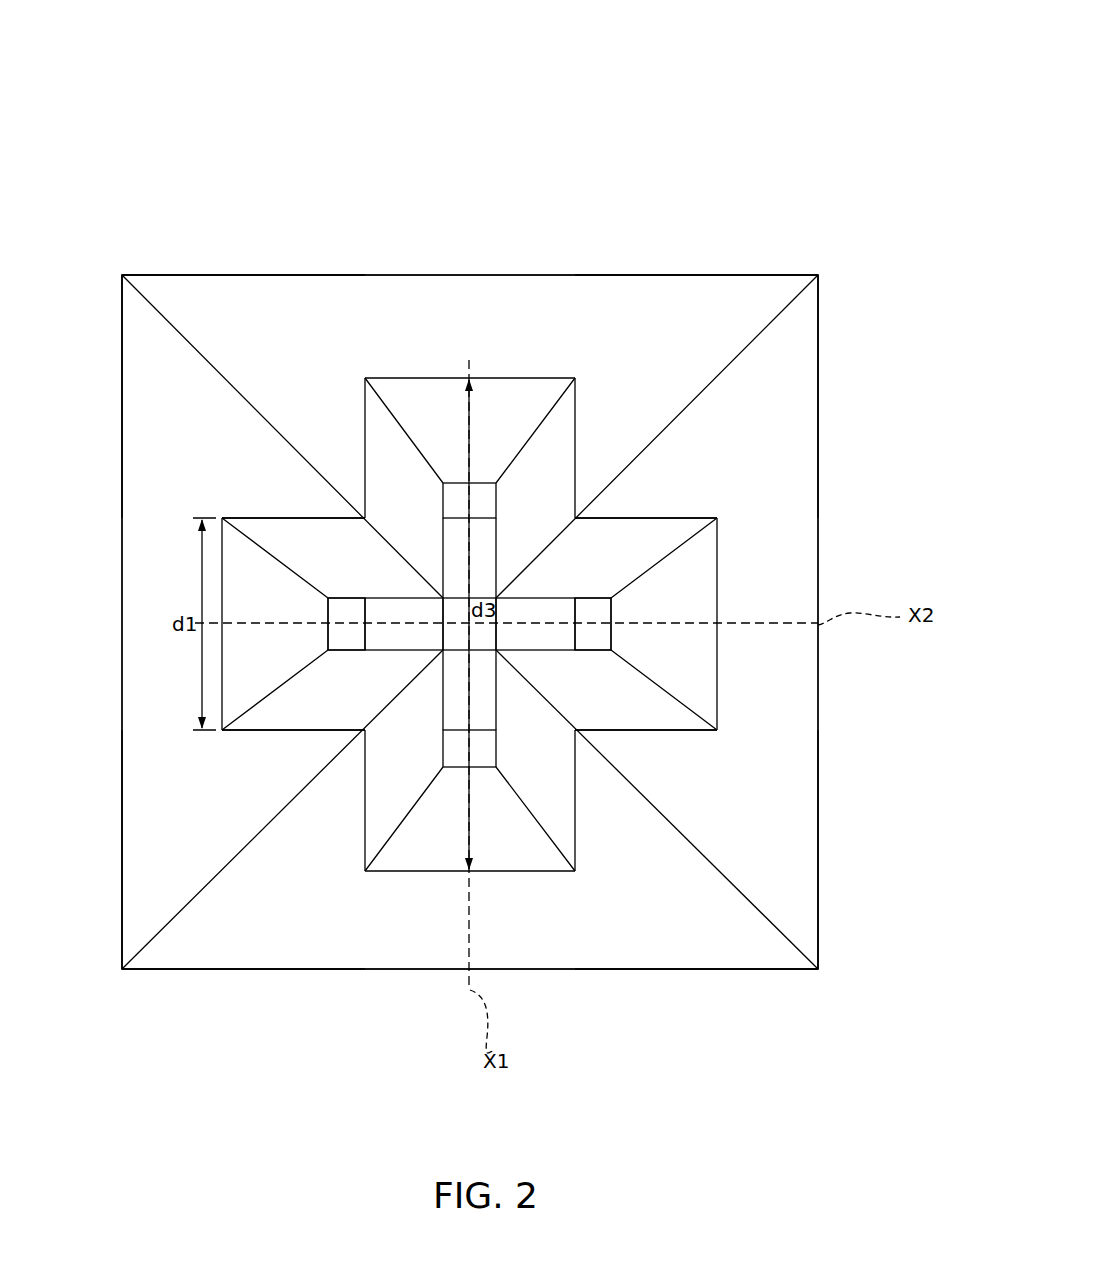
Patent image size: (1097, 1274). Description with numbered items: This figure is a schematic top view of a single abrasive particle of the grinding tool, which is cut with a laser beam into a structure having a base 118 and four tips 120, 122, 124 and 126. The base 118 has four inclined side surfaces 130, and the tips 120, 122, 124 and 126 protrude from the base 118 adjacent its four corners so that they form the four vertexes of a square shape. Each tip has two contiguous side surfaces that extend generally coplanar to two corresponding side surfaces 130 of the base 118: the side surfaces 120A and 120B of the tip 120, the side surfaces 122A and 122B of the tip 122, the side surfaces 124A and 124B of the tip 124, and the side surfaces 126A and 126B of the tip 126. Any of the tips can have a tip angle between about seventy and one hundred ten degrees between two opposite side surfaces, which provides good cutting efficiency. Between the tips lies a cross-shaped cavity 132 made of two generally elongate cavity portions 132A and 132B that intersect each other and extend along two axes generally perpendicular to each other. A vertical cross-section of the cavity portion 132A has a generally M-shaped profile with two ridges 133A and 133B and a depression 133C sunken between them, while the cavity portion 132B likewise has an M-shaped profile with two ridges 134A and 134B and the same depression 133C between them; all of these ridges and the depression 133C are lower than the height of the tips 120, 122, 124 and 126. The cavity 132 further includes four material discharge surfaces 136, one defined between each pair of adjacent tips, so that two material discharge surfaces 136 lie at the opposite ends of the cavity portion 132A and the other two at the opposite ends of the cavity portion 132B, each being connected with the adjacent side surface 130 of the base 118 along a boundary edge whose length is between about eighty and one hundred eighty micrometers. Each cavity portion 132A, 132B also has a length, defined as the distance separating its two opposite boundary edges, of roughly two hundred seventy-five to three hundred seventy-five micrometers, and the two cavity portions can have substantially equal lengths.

The base 118 is at (186, 950).
The tip 120 is at (264, 473).
The side surface of tip 120A is at (251, 420).
The side surface of tip 120B is at (263, 388).
The tip 122 is at (673, 478).
The side surface of tip 122A is at (627, 408).
The side surface of tip 122B is at (693, 423).
The tip 124 is at (673, 772).
The side surface of tip 124A is at (690, 830).
The side surface of tip 124B is at (627, 840).
The tip 126 is at (263, 772).
The side surface of tip 126A is at (313, 840).
The side surface of tip 126B is at (252, 828).
The inclined side surface 130 is at (363, 295).
The cavity 132 is at (898, 533).
The cavity portion 132A is at (516, 505).
The cavity portion 132B is at (618, 610).
The ridge 133A is at (457, 515).
The ridge 133B is at (458, 732).
The depression 133C is at (443, 595).
The ridge 134A is at (365, 612).
The ridge 134B is at (575, 633).
The material discharge surface 136 is at (503, 415).